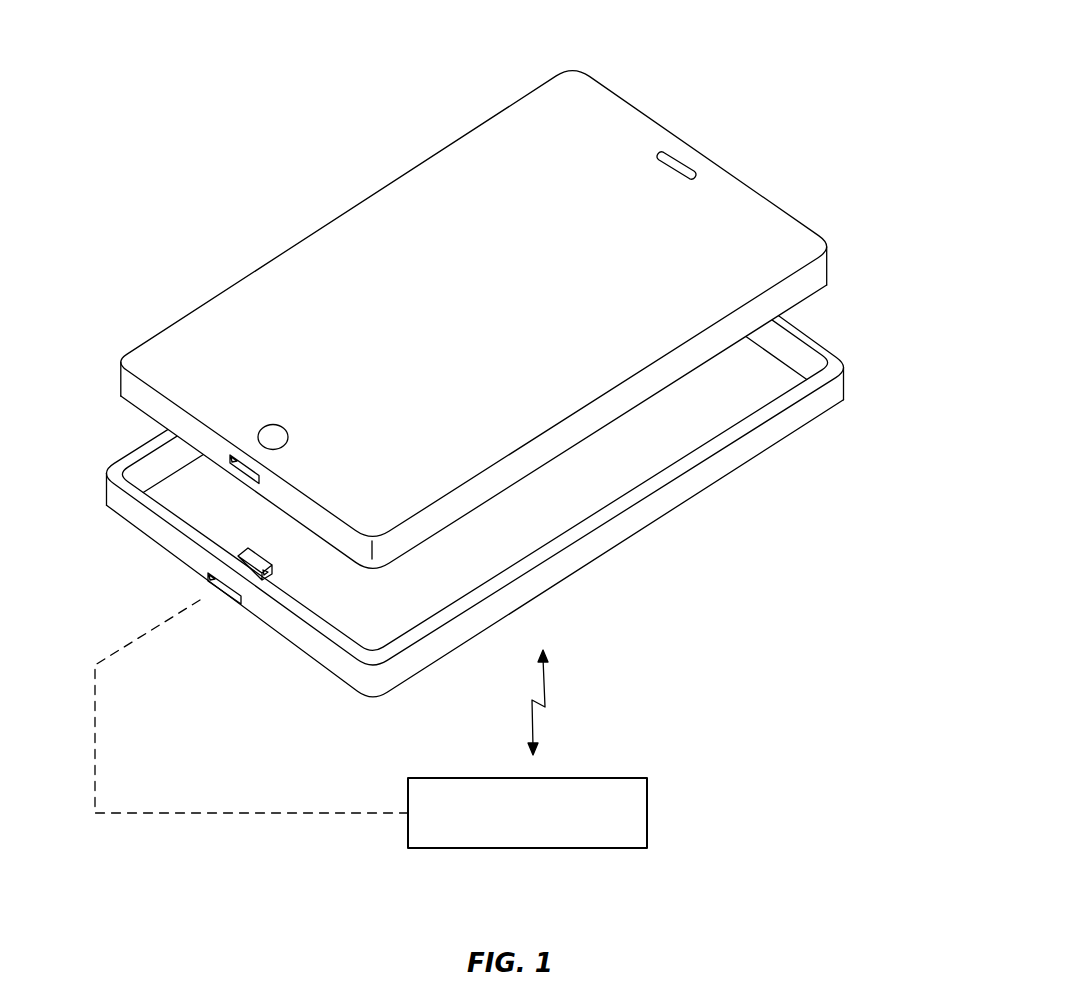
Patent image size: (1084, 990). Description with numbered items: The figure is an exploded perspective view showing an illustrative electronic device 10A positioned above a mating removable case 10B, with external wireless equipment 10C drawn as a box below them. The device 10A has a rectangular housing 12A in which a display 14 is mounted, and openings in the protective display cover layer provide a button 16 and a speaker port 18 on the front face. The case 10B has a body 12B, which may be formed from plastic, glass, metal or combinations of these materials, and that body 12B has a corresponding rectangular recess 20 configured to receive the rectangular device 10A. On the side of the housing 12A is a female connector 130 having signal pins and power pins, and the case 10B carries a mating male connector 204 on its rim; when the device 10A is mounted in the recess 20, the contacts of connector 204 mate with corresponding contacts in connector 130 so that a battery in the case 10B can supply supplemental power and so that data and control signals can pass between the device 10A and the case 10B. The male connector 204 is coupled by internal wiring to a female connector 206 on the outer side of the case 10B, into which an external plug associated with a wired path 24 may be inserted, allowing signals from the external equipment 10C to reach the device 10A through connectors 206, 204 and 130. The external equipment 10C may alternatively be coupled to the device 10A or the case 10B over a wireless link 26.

The electronic device 10A is at (519, 297).
The case 10B is at (477, 436).
The external wireless equipment 10C is at (648, 805).
The housing 12A is at (833, 260).
The body 12B is at (797, 423).
The display 14 is at (413, 218).
The button 16 is at (274, 426).
The speaker port 18 is at (677, 165).
The rectangular recess 20 is at (176, 491).
The wired path 24 is at (227, 815).
The wireless link 26 is at (548, 688).
The female connector 130 is at (268, 479).
The male connector 204 is at (270, 562).
The female connector 206 is at (204, 590).